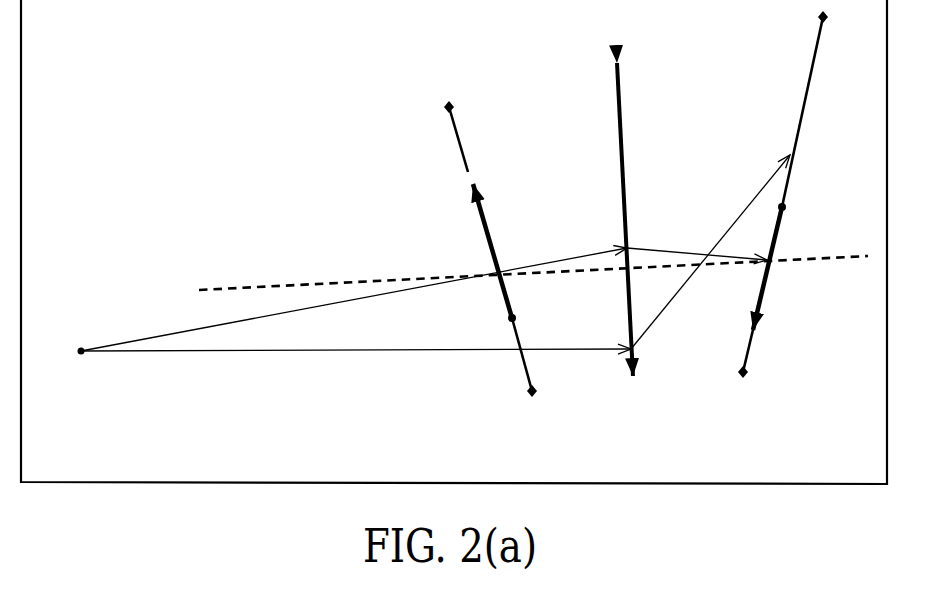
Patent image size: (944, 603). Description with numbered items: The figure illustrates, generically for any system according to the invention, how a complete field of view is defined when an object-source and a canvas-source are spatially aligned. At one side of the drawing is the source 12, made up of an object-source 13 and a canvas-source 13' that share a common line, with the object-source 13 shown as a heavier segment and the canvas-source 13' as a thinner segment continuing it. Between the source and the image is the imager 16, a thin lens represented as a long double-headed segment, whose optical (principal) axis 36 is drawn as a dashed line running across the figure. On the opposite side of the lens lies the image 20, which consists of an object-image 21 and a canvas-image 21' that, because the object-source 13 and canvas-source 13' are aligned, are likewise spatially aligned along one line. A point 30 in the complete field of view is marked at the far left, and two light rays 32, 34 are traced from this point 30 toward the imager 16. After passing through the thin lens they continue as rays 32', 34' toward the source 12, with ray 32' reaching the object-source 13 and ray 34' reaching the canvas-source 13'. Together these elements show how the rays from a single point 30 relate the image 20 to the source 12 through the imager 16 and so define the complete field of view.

The source 12 is at (795, 194).
The object-source 13 is at (775, 290).
The canvas-source 13' is at (817, 109).
The imager (thin lens) 16 is at (642, 219).
The image 20 is at (466, 249).
The object-image 21 is at (505, 290).
The canvas-image 21' is at (472, 136).
The point in the complete field of view 30 is at (76, 349).
The light ray 32 is at (354, 299).
The light ray 32' is at (697, 241).
The light ray 34 is at (356, 369).
The light ray 34' is at (710, 252).
The optical (principal) axis of the lens 36 is at (533, 273).